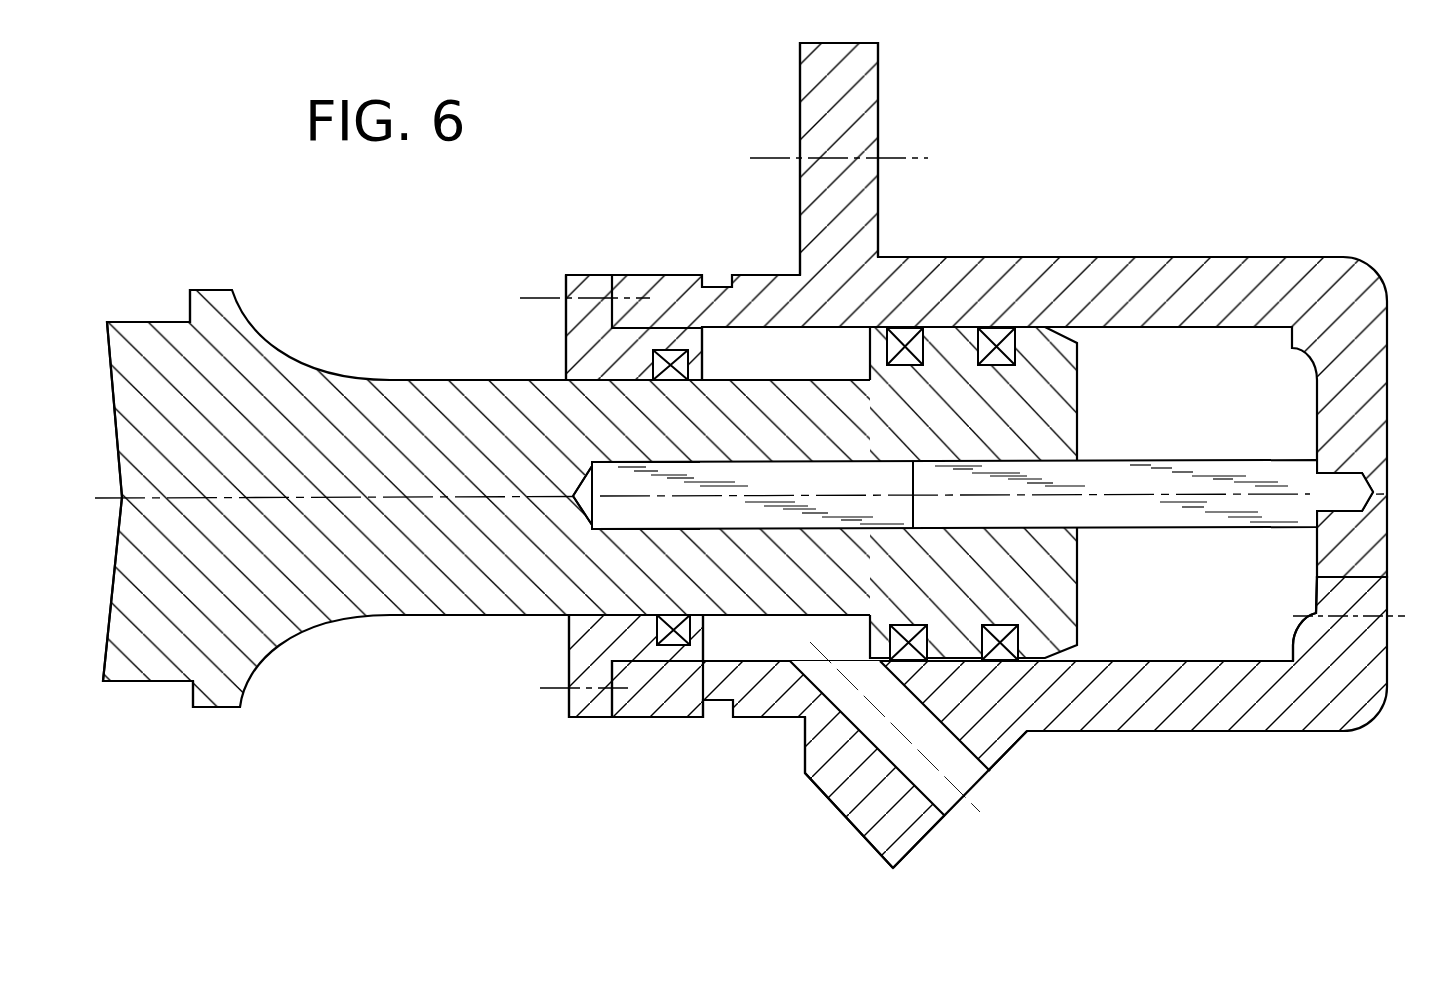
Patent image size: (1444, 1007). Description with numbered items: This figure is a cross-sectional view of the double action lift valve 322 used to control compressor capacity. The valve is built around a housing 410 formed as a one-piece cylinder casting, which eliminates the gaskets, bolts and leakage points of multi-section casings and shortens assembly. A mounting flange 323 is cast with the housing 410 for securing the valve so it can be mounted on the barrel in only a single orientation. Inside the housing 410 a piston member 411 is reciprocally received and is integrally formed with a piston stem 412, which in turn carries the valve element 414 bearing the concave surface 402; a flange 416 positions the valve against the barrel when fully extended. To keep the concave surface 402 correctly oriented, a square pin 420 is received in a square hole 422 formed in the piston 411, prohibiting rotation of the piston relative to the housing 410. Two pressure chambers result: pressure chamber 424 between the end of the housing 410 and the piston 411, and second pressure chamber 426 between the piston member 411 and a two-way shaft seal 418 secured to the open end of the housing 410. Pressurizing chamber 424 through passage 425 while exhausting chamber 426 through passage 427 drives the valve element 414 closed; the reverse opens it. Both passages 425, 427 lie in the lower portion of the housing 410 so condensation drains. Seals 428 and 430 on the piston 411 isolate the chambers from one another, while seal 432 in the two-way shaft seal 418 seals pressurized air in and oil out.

The mounting flange 323 is at (882, 108).
The double action lift valve 322 is at (766, 738).
The concave surface 402 is at (110, 356).
The housing 410 is at (1185, 720).
The piston member 411 is at (1066, 598).
The piston stem 412 is at (396, 386).
The valve element 414 is at (150, 688).
The flange 416 is at (187, 698).
The two-way shaft seal 418 is at (578, 655).
The square pin 420 is at (1161, 473).
The square hole 422 is at (702, 508).
The pressure chamber 424 is at (1193, 337).
The passage 425 is at (1377, 642).
The second pressure chamber 426 is at (717, 643).
The passage 427 is at (936, 793).
The seal 428 is at (906, 335).
The seal 430 is at (999, 335).
The seal 432 is at (672, 352).